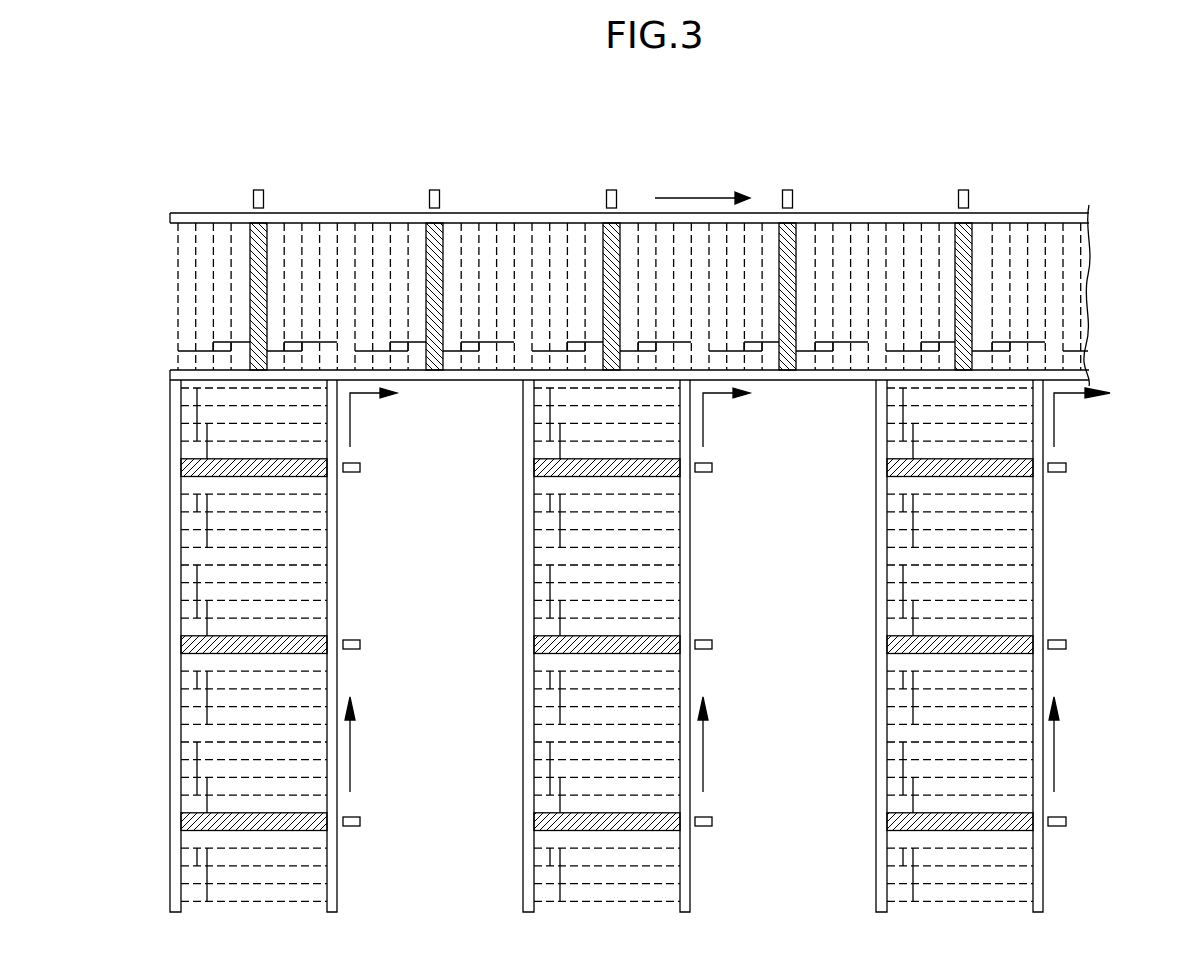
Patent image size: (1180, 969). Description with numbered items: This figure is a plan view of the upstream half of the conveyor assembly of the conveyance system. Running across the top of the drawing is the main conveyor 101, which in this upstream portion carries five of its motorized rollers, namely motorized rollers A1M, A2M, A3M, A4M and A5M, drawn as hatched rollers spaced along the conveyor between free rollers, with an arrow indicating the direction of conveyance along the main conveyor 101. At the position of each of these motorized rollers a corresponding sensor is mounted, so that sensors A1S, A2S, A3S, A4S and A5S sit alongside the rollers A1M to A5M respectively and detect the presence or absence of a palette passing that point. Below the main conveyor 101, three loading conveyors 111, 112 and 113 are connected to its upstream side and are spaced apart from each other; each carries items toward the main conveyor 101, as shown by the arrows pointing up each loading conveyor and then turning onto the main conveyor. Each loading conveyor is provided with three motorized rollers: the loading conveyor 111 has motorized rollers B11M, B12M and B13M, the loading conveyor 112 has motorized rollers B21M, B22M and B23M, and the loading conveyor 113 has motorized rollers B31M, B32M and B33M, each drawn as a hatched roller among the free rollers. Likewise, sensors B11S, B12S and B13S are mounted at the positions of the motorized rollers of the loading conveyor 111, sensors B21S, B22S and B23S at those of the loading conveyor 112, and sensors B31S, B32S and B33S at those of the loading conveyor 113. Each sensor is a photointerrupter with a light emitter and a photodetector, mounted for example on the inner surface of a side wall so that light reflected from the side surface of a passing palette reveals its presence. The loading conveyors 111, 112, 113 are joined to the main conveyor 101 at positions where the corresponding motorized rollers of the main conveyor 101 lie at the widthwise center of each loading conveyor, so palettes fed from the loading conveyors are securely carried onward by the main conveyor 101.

The main conveyor 101 is at (735, 157).
The loading conveyor 111 is at (198, 549).
The loading conveyor 112 is at (664, 646).
The loading conveyor 113 is at (1013, 646).
The motorized roller A1M is at (262, 248).
The motorized roller A2M is at (438, 248).
The motorized roller A3M is at (615, 245).
The motorized roller A4M is at (791, 248).
The motorized roller A5M is at (968, 248).
The sensor A1S is at (258, 190).
The sensor A2S is at (434, 190).
The sensor A3S is at (612, 190).
The sensor A4S is at (788, 190).
The sensor A5S is at (964, 190).
The motorized roller B11M is at (308, 844).
The motorized roller B12M is at (308, 667).
The motorized roller B13M is at (308, 490).
The motorized roller B21M is at (660, 844).
The motorized roller B22M is at (660, 667).
The motorized roller B23M is at (660, 490).
The motorized roller B31M is at (1011, 845).
The motorized roller B32M is at (1011, 668).
The motorized roller B33M is at (1011, 491).
The sensor B11S is at (401, 822).
The sensor B12S is at (401, 645).
The sensor B13S is at (401, 468).
The sensor B21S is at (753, 822).
The sensor B22S is at (753, 645).
The sensor B23S is at (753, 468).
The sensor B31S is at (1104, 822).
The sensor B32S is at (1104, 645).
The sensor B33S is at (1104, 468).